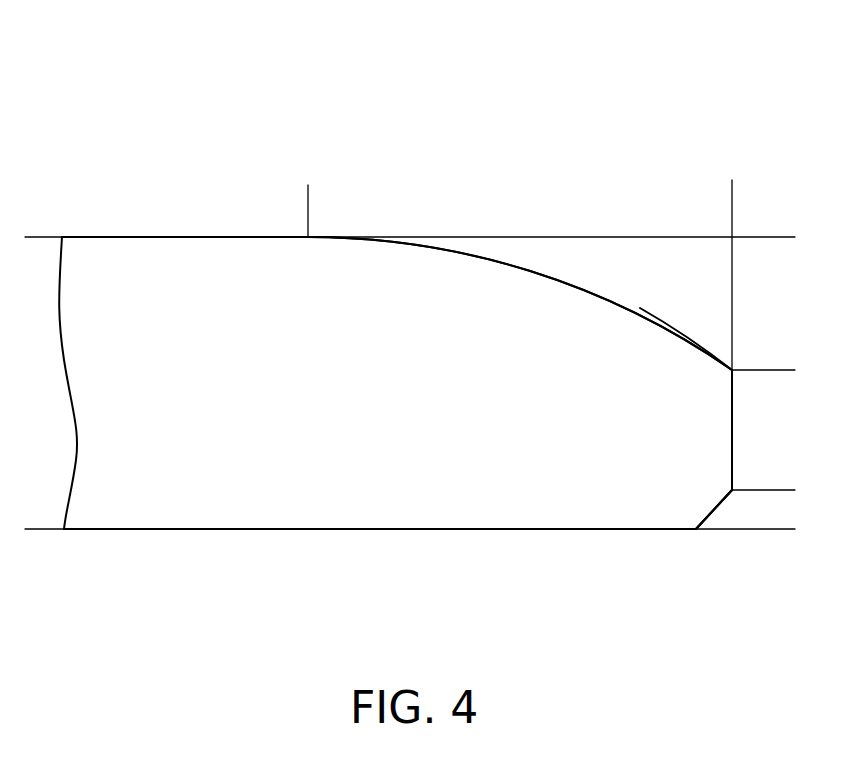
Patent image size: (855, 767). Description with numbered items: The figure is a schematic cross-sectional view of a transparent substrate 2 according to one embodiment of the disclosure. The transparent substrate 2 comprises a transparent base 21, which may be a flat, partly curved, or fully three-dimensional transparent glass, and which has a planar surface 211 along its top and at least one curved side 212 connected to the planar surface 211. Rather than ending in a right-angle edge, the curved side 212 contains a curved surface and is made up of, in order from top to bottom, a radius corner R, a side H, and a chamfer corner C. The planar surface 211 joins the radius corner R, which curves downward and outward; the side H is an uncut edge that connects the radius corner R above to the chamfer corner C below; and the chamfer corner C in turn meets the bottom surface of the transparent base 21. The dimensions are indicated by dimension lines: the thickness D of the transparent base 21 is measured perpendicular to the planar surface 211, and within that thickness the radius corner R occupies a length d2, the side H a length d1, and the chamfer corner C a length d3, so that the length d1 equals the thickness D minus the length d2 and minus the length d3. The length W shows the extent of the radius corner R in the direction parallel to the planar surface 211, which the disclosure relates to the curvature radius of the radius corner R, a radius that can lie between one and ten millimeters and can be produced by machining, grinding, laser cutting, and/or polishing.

The transparent substrate 2 is at (137, 55).
The transparent base 21 is at (109, 506).
The planar surface 211 is at (146, 237).
The curved side 212 is at (646, 358).
The radius corner R is at (690, 346).
The side H is at (736, 440).
The chamfer corner C is at (716, 507).
The thickness D is at (32, 237).
The length of the radius corner W is at (308, 193).
The length of the side d1 is at (786, 370).
The length of the radius corner d2 is at (786, 237).
The length of the chamfer corner d3 is at (786, 560).